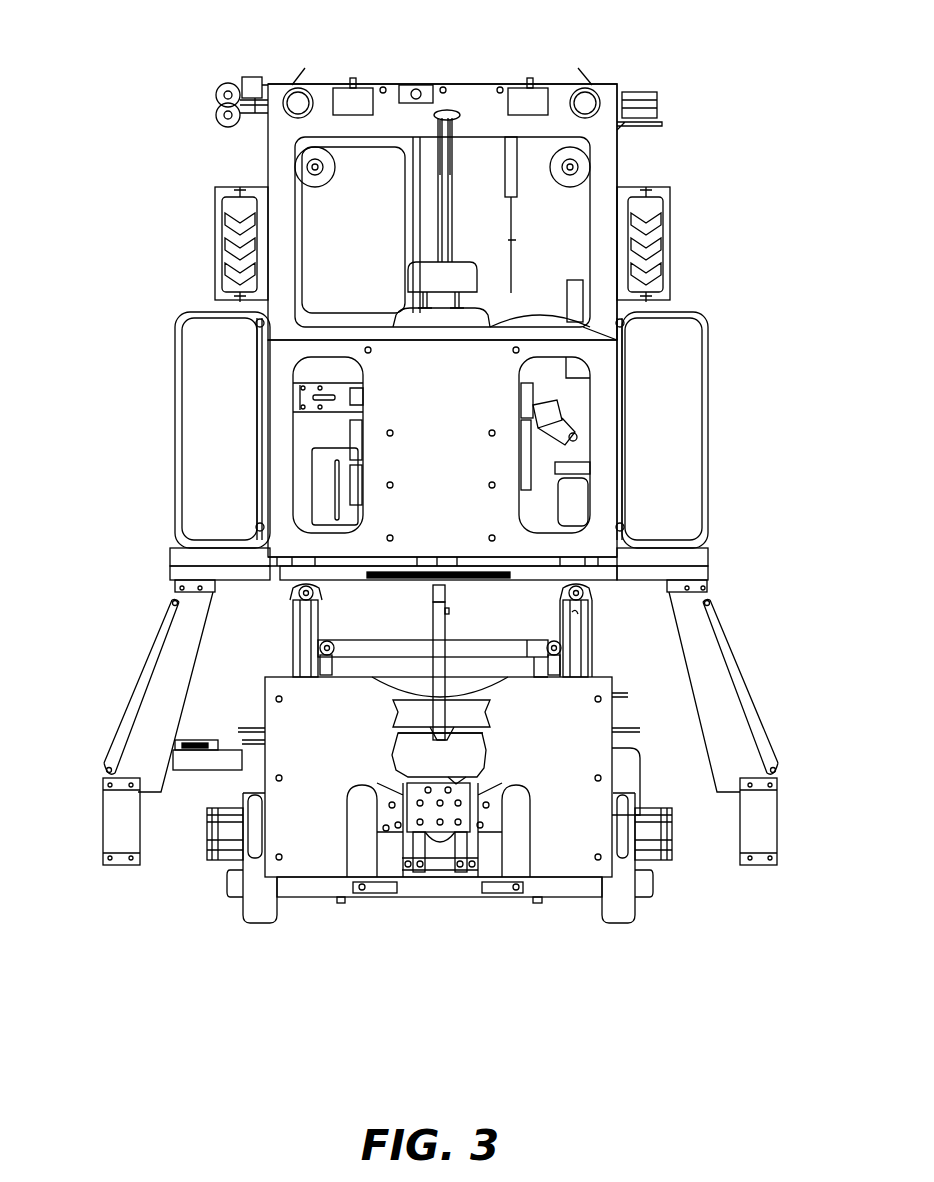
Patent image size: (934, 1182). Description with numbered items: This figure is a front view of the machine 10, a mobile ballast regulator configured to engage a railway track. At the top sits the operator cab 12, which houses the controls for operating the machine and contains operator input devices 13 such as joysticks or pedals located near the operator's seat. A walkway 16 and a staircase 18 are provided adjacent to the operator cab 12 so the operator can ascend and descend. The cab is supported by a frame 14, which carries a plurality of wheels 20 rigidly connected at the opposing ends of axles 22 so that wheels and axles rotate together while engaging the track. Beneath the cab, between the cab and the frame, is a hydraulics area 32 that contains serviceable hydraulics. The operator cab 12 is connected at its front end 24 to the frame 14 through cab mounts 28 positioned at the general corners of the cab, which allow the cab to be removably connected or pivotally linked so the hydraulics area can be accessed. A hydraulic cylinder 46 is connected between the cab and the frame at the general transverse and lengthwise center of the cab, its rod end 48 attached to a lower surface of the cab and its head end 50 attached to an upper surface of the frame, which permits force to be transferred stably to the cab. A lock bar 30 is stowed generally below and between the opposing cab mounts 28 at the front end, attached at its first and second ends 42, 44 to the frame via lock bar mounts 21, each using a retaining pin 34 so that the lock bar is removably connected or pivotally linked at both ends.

The machine 10 is at (692, 56).
The operator cab 12 is at (605, 160).
The operator input devices 13 is at (605, 334).
The frame 14 is at (568, 857).
The walkway 16 is at (200, 545).
The staircase 18 is at (128, 713).
The wheels 20 is at (240, 910).
The lock bar mount 21 is at (318, 660).
The axles 22 is at (220, 862).
The front end 24 is at (605, 553).
The cab mounts 28 is at (195, 594).
The lock bar 30 is at (372, 647).
The hydraulics area 32 is at (565, 628).
The retaining pin 34 is at (318, 652).
The first end 42 is at (353, 642).
The second end 44 is at (537, 650).
The hydraulic cylinder 46 is at (437, 630).
The rod end 48 is at (446, 613).
The head end 50 is at (447, 707).